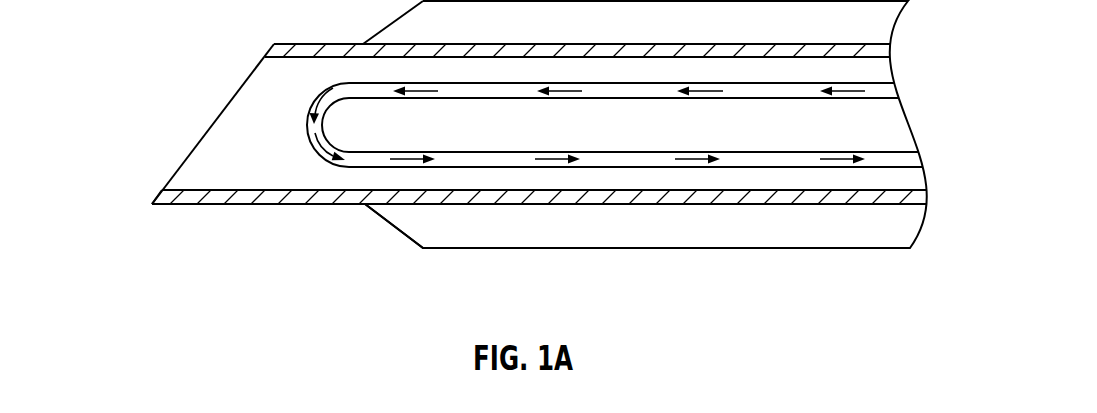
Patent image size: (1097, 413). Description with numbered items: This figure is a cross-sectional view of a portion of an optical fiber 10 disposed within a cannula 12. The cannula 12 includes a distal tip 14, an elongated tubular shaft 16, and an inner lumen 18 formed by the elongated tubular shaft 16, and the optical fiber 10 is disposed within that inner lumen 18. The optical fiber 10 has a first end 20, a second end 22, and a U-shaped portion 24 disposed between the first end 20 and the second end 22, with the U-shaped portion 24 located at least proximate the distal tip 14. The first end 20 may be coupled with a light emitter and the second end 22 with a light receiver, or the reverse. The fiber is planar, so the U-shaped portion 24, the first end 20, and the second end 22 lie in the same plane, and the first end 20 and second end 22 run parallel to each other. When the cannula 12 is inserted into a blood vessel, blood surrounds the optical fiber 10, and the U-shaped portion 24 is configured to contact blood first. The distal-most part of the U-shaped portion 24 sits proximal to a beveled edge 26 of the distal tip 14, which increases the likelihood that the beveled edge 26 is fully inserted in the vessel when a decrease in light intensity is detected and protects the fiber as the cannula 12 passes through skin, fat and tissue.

The optical fiber 10 is at (615, 90).
The cannula 12 is at (320, 206).
The distal tip 14 is at (152, 204).
The elongated tubular shaft 16 is at (667, 205).
The inner lumen 18 is at (276, 159).
The first end 20 is at (792, 90).
The second end 22 is at (802, 158).
The U-shaped portion 24 is at (305, 127).
The beveled edge 26 is at (210, 128).